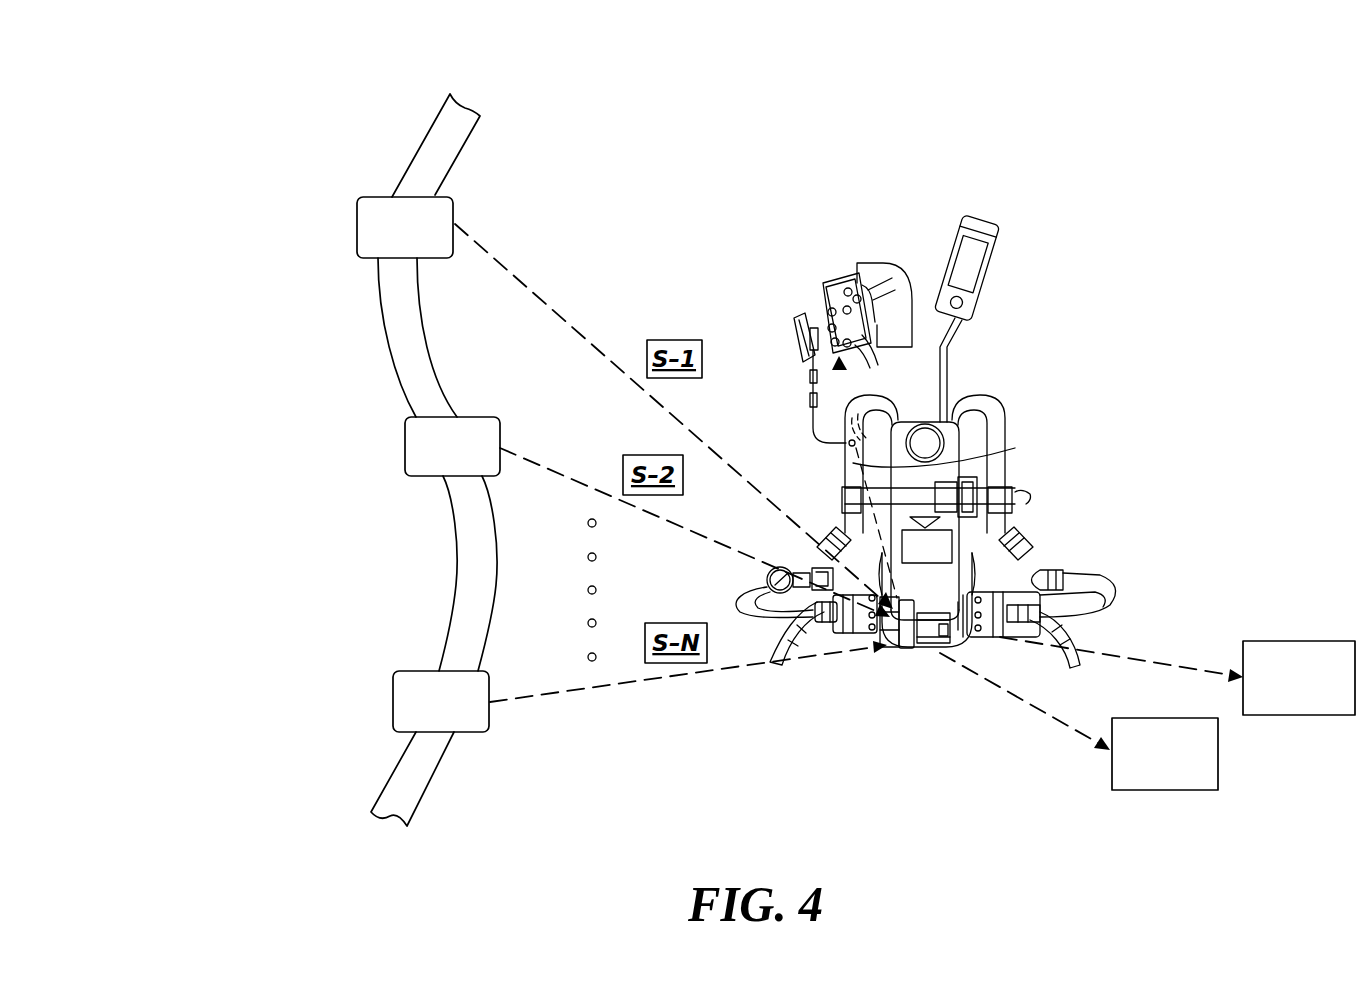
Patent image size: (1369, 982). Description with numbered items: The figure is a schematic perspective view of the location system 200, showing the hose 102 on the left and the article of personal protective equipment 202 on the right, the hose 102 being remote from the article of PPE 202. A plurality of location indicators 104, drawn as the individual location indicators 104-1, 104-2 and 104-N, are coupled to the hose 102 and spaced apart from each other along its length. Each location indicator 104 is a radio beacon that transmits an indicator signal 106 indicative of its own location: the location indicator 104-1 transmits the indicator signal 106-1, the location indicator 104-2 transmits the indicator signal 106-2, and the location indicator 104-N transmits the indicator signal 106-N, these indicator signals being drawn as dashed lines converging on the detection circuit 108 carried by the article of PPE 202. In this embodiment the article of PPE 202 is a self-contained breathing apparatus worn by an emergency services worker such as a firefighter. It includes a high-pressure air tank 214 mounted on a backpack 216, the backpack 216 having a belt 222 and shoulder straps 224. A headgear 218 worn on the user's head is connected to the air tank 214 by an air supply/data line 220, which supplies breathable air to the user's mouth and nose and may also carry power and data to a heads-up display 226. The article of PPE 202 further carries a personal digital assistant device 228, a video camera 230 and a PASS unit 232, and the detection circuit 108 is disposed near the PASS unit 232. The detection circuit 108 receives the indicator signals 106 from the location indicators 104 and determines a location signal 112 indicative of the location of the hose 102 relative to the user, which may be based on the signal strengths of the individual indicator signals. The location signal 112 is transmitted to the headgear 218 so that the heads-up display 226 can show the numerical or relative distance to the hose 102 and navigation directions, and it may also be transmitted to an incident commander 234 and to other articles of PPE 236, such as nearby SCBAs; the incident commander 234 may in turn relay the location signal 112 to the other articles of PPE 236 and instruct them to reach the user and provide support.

The location system 200 is at (174, 112).
The hose 102 is at (415, 142).
The location indicator 104 is at (325, 472).
The location indicator 104-1 is at (357, 227).
The location indicator 104-2 is at (405, 446).
The location indicator 104-N is at (393, 701).
The indicator signal 106 is at (674, 499).
The indicator signal 106-1 is at (587, 343).
The indicator signal 106-2 is at (558, 470).
The indicator signal 106-N is at (633, 682).
The detection circuit 108 is at (907, 637).
The location signal 112 is at (850, 392).
The article of personal protective equipment 202 is at (1066, 237).
The high-pressure air tank 214 is at (933, 578).
The backpack 216 is at (1048, 489).
The headgear 218 is at (813, 270).
The air supply/data line 220 is at (813, 413).
The belt 222 is at (1007, 627).
The shoulder straps 224 is at (997, 433).
The heads-up display 226 is at (827, 300).
The personal digital assistant device 228 is at (947, 263).
The video camera 230 is at (980, 223).
The PASS unit 232 is at (933, 633).
The incident commander 234 is at (1165, 754).
The other articles of PPE 236 is at (1299, 678).